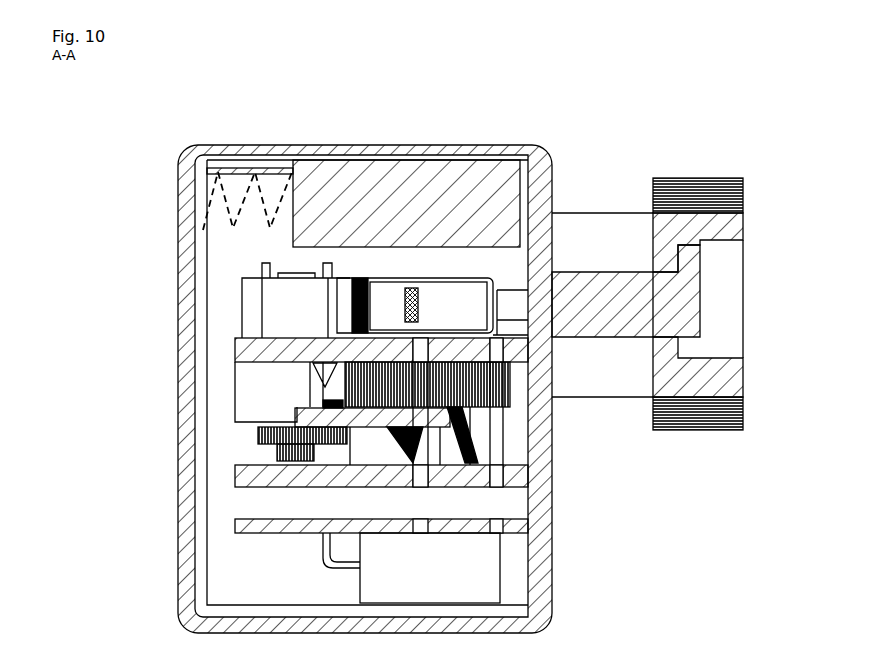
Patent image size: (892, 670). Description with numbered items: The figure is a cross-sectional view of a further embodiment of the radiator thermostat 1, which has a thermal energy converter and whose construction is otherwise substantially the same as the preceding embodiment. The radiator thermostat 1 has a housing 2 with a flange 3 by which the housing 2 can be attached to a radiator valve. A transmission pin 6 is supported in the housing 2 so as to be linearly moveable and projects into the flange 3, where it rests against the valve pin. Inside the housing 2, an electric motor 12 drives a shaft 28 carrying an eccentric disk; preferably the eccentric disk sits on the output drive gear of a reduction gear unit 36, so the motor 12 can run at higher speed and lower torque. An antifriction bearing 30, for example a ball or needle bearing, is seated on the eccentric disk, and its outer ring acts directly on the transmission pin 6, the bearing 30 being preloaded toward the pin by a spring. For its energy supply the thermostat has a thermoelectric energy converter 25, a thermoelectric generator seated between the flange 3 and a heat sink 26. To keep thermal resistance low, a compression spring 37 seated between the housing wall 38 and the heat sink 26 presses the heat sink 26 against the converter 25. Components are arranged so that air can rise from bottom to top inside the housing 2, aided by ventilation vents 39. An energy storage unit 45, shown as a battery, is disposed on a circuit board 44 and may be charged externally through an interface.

The radiator thermostat 1 is at (672, 110).
The housing 2 is at (537, 137).
The flange 3 is at (605, 373).
The transmission pin 6 is at (552, 418).
The electric motor 12 is at (272, 302).
The thermoelectric energy converter 25 is at (512, 300).
The heat sink 26 is at (428, 210).
The shaft 28 is at (330, 335).
The antifriction bearing 30 is at (450, 275).
The reduction gear unit 36 is at (255, 453).
The compression spring 37 is at (247, 192).
The housing wall 38 is at (180, 213).
The ventilation vents 39 is at (266, 152).
The circuit board 44 is at (513, 530).
The energy storage unit 45 is at (443, 575).